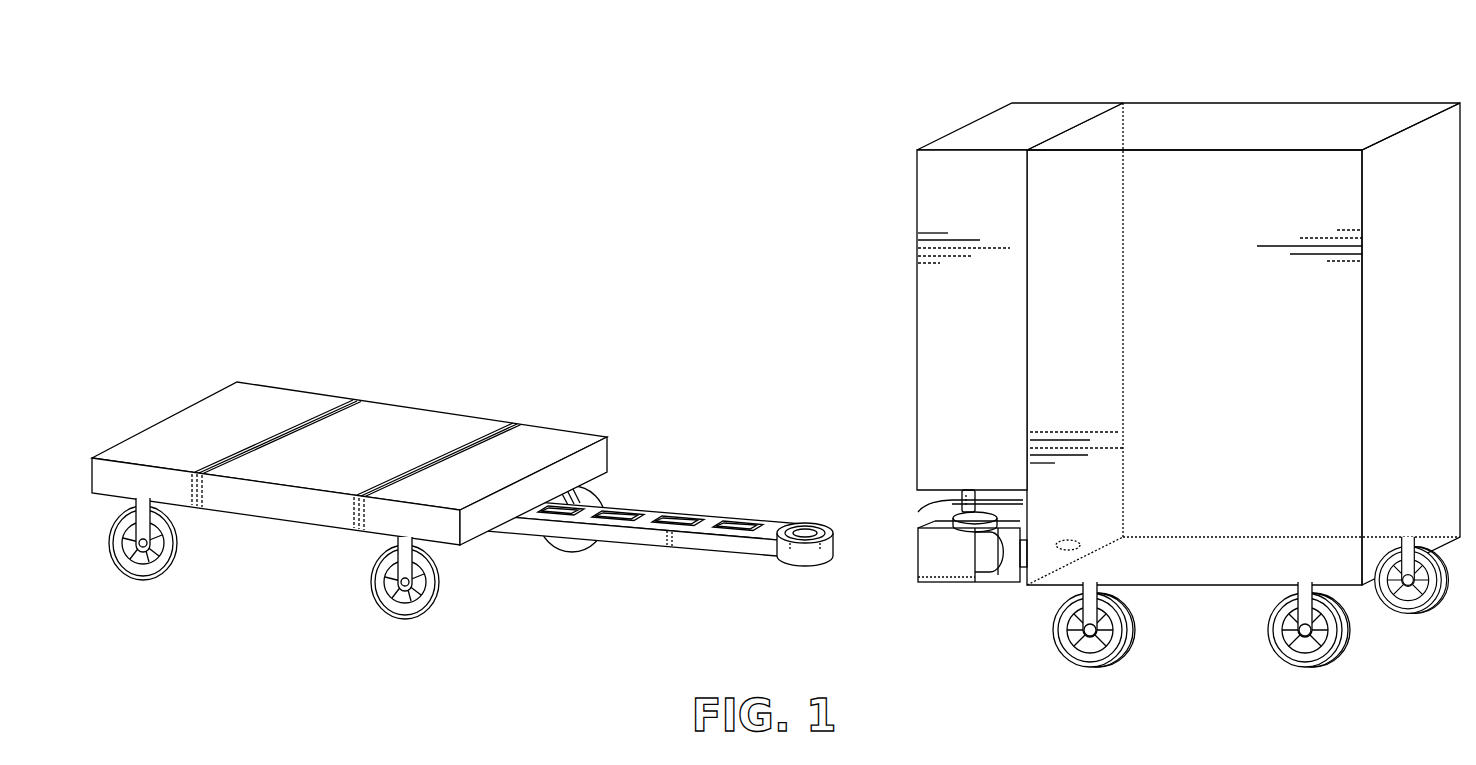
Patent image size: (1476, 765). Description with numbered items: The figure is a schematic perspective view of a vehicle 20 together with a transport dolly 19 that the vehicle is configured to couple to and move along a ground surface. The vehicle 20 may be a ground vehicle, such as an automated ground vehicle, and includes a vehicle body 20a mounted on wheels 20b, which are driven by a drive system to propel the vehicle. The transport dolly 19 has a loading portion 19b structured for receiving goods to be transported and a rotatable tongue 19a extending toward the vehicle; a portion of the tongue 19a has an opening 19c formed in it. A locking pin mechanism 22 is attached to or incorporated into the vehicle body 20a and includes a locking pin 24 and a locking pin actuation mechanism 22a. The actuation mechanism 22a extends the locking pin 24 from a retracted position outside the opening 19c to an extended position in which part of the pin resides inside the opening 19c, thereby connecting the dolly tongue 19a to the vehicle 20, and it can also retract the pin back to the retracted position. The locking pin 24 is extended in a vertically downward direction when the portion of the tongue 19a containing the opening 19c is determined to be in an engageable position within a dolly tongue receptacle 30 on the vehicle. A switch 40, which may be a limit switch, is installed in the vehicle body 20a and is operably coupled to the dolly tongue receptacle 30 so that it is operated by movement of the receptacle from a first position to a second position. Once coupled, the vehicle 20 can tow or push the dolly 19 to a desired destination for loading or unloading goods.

The transport dolly 19 is at (488, 459).
The rotatable tongue 19a is at (652, 503).
The loading portion 19b is at (417, 437).
The opening 19c is at (803, 530).
The vehicle 20 is at (1243, 363).
The vehicle body 20a is at (1138, 135).
The wheels 20b is at (1270, 632).
The locking pin mechanism 22 is at (955, 274).
The locking pin actuation mechanism 22a is at (937, 340).
The locking pin 24 is at (925, 500).
The dolly tongue receptacle 30 is at (953, 567).
The switch 40 is at (1080, 546).